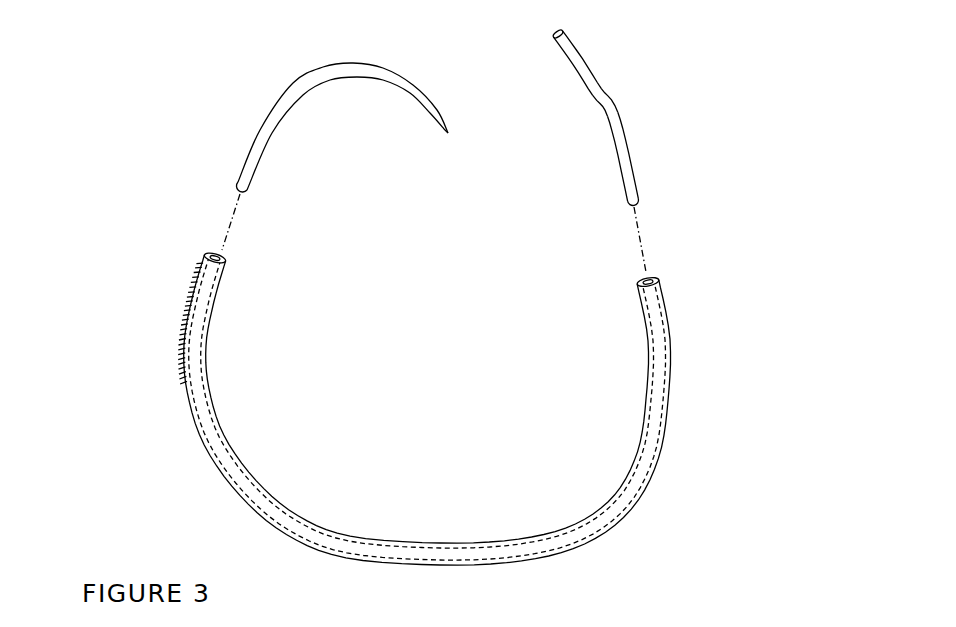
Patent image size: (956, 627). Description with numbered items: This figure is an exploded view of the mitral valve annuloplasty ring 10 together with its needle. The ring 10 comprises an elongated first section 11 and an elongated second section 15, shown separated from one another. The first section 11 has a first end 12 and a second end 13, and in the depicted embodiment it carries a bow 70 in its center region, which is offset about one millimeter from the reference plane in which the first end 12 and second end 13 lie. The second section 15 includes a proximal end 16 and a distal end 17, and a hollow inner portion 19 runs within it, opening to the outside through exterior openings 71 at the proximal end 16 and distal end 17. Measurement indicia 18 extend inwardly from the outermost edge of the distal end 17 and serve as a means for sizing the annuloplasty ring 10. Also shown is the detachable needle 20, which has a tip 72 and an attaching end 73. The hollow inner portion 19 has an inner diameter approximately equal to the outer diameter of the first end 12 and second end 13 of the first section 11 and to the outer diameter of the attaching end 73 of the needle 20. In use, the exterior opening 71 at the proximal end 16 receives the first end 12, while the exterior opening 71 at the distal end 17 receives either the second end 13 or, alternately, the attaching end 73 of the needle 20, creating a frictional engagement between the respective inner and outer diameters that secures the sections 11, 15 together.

The annuloplasty ring 10 is at (437, 287).
The first section 11 is at (661, 108).
The first end 12 is at (632, 193).
The second end 13 is at (567, 38).
The second section 15 is at (490, 410).
The proximal end 16 is at (658, 318).
The distal end 17 is at (210, 278).
The measurement indicia 18 is at (187, 308).
The hollow inner portion 19 is at (668, 383).
The detachable needle 20 is at (311, 103).
The bow 70 is at (608, 97).
The exterior openings 71 is at (207, 252).
The tip 72 is at (443, 113).
The attaching end 73 is at (242, 182).